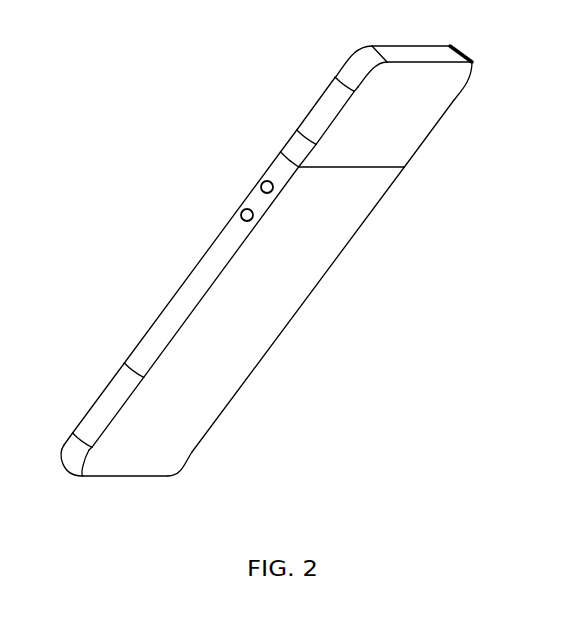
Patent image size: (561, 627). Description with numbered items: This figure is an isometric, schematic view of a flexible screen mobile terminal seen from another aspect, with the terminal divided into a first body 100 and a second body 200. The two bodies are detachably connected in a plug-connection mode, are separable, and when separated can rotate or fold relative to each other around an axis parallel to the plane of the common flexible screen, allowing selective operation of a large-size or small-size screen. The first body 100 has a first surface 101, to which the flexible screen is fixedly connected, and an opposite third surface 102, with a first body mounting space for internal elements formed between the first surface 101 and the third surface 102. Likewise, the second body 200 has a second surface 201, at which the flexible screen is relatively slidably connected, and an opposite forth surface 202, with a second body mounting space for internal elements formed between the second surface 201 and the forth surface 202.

The first body 100 is at (224, 314).
The first surface 101 is at (180, 283).
The third surface 102 is at (125, 363).
The second body 200 is at (372, 99).
The second surface 201 is at (334, 79).
The forth surface 202 is at (297, 130).